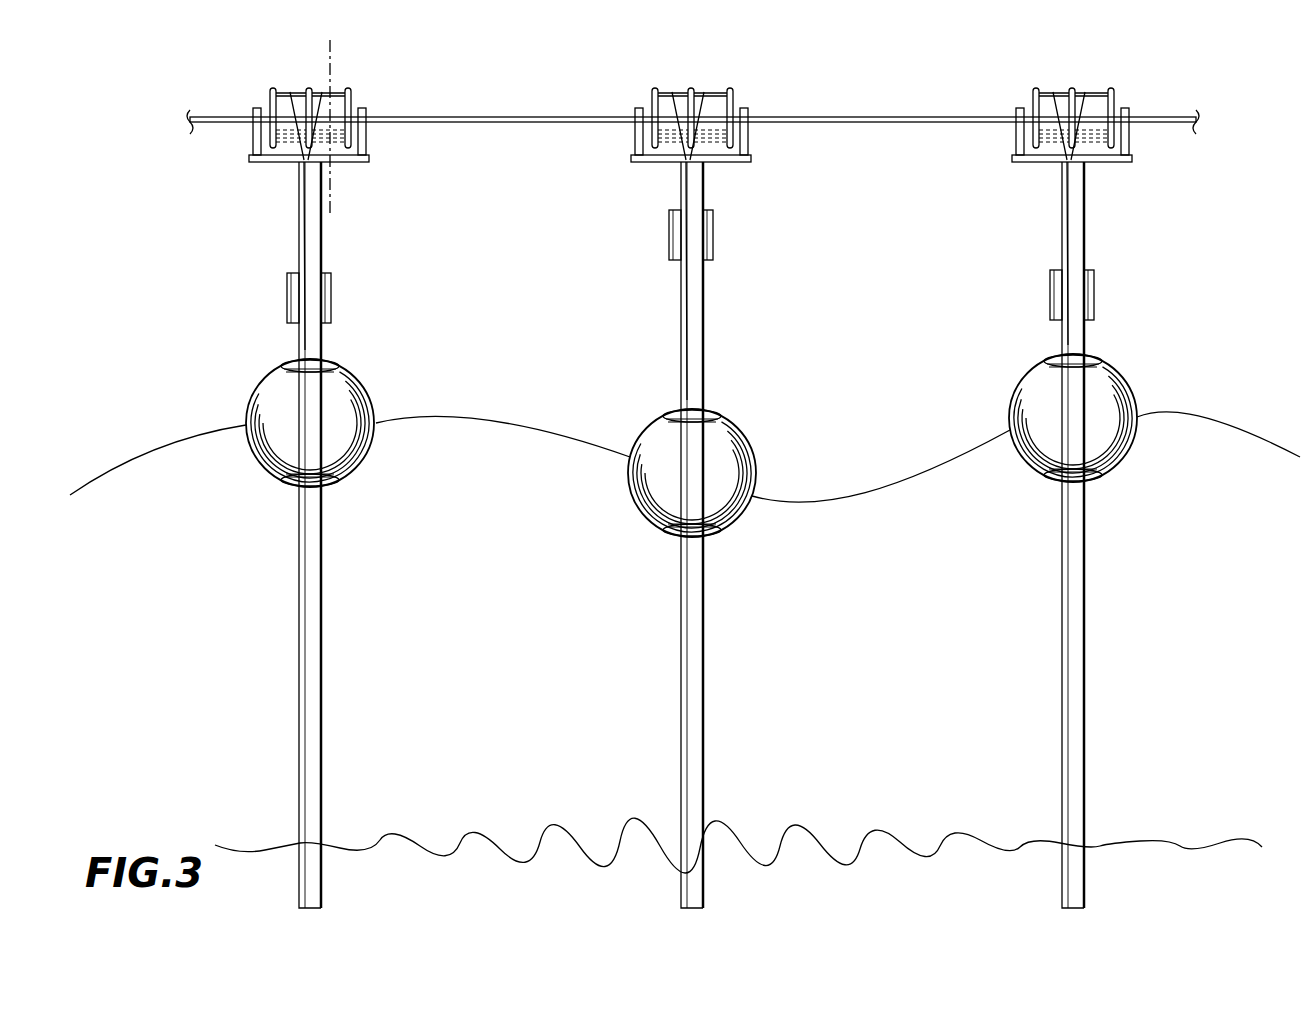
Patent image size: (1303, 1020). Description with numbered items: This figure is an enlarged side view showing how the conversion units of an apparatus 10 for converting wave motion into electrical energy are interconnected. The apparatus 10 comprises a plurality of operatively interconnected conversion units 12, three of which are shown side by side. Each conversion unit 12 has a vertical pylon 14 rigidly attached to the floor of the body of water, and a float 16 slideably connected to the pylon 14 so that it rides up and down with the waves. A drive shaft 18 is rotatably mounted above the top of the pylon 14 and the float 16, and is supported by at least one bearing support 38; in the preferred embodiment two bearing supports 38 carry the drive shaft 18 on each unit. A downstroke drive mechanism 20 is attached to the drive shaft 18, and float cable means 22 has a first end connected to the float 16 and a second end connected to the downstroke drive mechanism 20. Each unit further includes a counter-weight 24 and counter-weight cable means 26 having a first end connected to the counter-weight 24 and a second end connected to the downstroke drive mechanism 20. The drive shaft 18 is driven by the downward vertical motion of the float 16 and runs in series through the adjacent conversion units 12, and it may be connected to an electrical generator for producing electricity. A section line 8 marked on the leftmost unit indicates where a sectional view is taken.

The section line 8- 8 is at (318, 73).
The apparatus for converting wave motion into electrical energy 10 is at (1178, 78).
The conversion unit 12 is at (208, 375).
The vertical pylon 14 is at (322, 621).
The float 16 is at (367, 393).
The drive shaft 18 is at (518, 116).
The downstroke drive mechanism 20 is at (352, 90).
The float cable means 22 is at (297, 200).
The counter-weight 24 is at (290, 298).
The counter-weight cable means 26 is at (367, 160).
The bearing support 38 is at (254, 152).